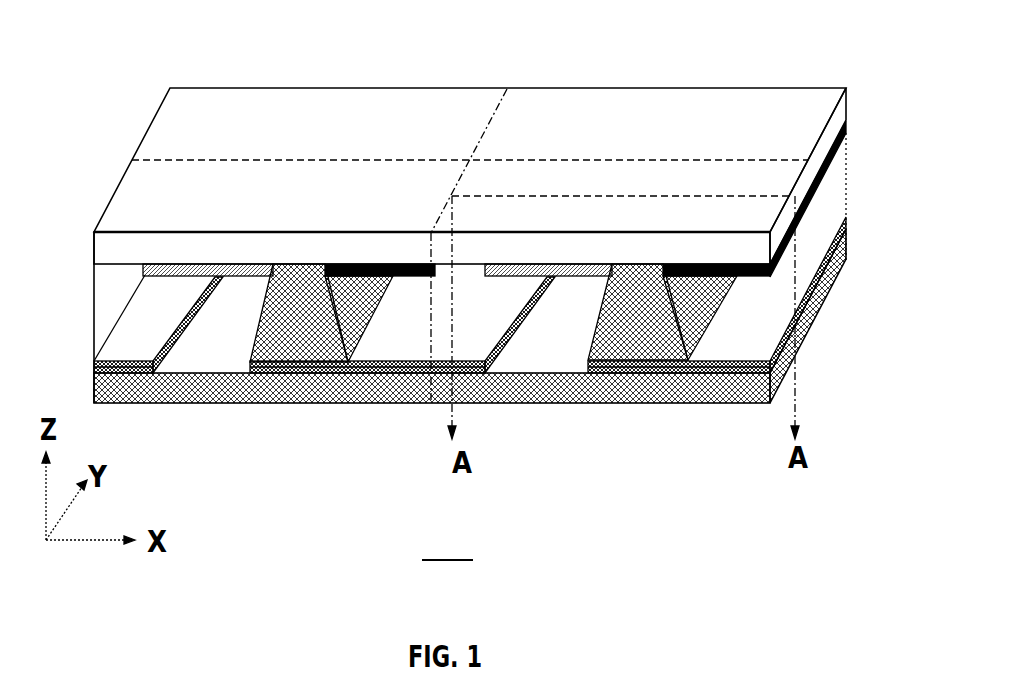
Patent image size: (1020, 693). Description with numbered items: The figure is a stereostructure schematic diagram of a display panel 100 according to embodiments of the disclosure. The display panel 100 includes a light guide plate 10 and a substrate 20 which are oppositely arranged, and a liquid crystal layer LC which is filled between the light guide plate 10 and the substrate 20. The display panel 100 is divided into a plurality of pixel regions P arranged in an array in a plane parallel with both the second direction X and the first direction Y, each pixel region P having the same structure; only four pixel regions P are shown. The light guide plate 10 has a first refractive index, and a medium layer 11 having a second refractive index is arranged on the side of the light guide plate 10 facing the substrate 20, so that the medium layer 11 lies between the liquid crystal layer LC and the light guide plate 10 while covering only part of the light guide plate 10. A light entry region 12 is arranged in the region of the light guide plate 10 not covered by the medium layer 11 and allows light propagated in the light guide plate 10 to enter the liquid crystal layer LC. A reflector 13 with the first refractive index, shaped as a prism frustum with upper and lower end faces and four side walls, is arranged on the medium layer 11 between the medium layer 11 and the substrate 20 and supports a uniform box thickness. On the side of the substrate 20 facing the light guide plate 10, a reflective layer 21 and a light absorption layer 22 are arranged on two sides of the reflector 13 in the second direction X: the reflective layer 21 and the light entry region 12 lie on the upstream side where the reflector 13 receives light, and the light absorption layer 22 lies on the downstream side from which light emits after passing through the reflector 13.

The display panel 100 is at (447, 546).
The light guide plate 10 is at (547, 392).
The medium layer 11 is at (385, 372).
The light entry region 12 is at (573, 373).
The reflector 13 is at (630, 345).
The substrate 20 is at (700, 100).
The reflective layer 21 is at (157, 270).
The light absorption layer 22 is at (735, 278).
The liquid crystal layer LC is at (828, 192).
The pixel region P is at (190, 116).